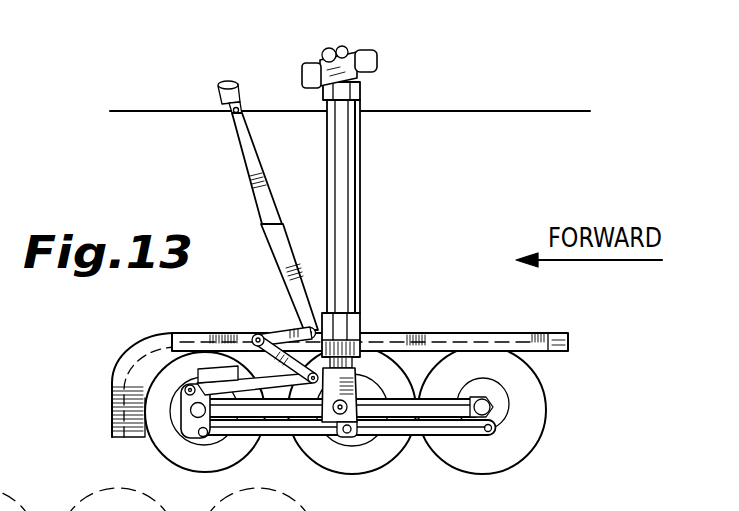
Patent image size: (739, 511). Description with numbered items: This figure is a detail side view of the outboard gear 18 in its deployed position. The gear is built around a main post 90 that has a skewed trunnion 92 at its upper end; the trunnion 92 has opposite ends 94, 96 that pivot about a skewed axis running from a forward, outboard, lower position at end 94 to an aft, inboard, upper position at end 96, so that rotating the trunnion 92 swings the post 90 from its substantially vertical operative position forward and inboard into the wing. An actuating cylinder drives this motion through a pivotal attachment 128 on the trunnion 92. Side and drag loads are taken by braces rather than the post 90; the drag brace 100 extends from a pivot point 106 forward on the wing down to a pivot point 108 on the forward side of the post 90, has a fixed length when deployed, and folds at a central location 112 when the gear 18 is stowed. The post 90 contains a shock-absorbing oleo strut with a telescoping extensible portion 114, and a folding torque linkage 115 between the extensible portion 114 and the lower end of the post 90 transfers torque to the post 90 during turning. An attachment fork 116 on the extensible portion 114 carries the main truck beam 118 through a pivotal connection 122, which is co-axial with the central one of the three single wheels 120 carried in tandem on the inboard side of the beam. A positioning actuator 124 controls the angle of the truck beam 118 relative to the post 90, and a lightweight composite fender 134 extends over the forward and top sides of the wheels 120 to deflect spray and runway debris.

The outboard gear 18 is at (398, 157).
The main post 90 is at (345, 222).
The skewed trunnion 92 is at (353, 50).
The trunnion end 94 is at (307, 80).
The trunnion end 96 is at (377, 57).
The pivotal attachment 128 is at (331, 50).
The drag brace 100 is at (247, 172).
The pivot point 106 is at (218, 93).
The central fold location 112 is at (268, 225).
The pivot point 108 is at (300, 328).
The folding torque linkage 115 is at (258, 338).
The extensible portion 114 is at (372, 357).
The attachment fork 116 is at (326, 438).
The main truck beam 118 is at (413, 414).
The pivotal connection 122 is at (382, 436).
The single wheels 120 is at (162, 445).
The positioning actuator 124 is at (207, 348).
The fender 134 is at (450, 332).